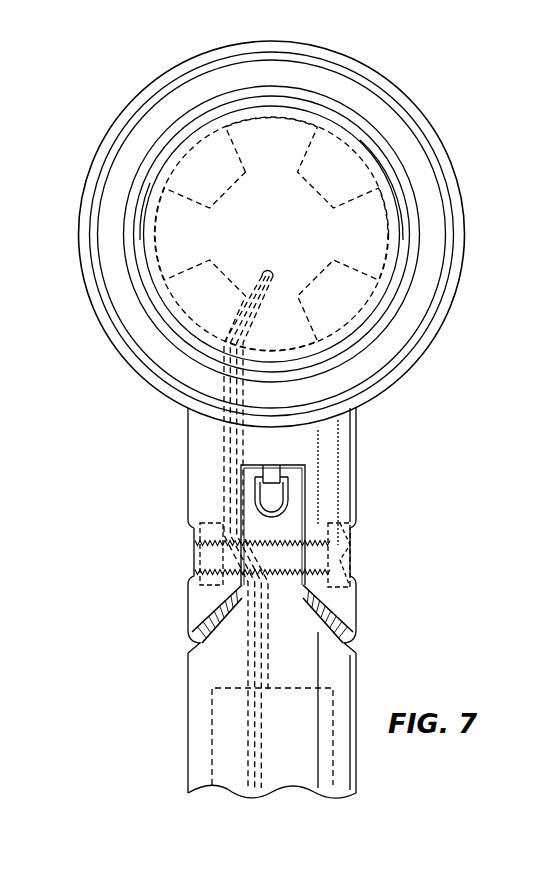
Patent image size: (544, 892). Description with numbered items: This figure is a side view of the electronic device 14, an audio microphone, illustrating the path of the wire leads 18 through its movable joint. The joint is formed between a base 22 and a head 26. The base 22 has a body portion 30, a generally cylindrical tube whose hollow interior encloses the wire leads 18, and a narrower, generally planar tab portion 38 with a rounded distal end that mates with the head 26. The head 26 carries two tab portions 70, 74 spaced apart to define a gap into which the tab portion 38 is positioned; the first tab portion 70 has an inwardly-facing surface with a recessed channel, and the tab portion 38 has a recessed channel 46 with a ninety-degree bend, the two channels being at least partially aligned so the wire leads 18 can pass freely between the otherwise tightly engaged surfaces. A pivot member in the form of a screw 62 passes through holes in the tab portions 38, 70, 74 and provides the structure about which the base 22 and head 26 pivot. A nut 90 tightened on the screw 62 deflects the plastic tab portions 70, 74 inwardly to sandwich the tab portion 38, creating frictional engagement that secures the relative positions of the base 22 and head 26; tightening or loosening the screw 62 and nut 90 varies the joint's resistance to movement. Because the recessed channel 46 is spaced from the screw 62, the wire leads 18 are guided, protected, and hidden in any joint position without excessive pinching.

The electronic device 14 is at (436, 97).
The head 26 is at (449, 162).
The first tab portion 70 is at (200, 465).
The second tab portion 74 is at (357, 431).
The tab portion 38 is at (290, 500).
The pivot member 62 is at (353, 554).
The nut 90 is at (190, 580).
The recessed channel 46 is at (242, 588).
The base 22 is at (357, 677).
The body portion 30 is at (202, 747).
The wire leads 18 is at (250, 664).